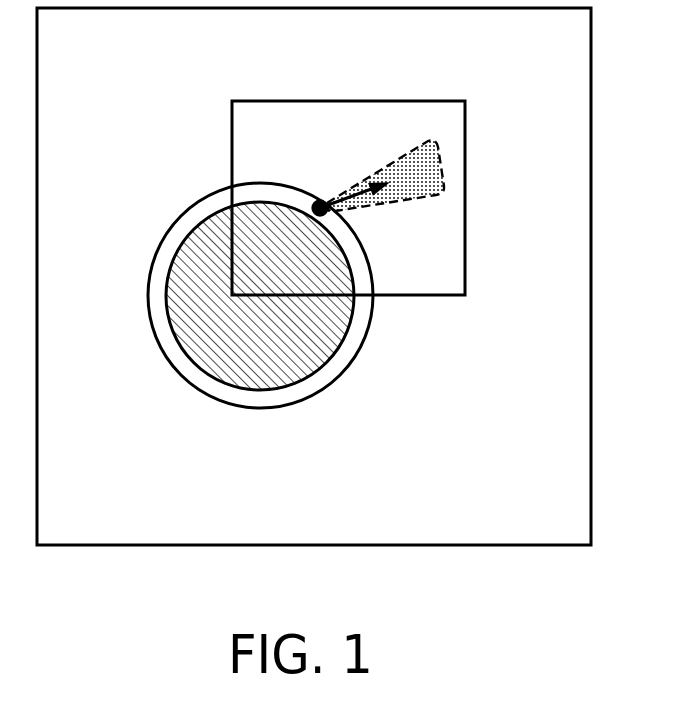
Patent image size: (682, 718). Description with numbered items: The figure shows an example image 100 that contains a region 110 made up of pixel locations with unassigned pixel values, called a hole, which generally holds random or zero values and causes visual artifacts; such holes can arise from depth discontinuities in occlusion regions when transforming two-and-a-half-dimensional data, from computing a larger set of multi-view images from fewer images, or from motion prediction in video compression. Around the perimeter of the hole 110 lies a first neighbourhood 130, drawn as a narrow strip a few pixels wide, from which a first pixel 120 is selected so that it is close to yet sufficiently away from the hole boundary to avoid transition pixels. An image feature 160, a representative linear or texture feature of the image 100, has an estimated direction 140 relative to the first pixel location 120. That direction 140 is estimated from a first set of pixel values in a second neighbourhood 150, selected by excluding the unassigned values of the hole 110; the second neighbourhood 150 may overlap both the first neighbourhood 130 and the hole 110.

The example image 100 is at (117, 79).
The region 110 is at (175, 300).
The first pixel 120 is at (329, 215).
The first neighbourhood 130 is at (274, 392).
The estimated direction 140 is at (352, 188).
The second neighbourhood 150 is at (465, 268).
The image feature 160 is at (440, 183).